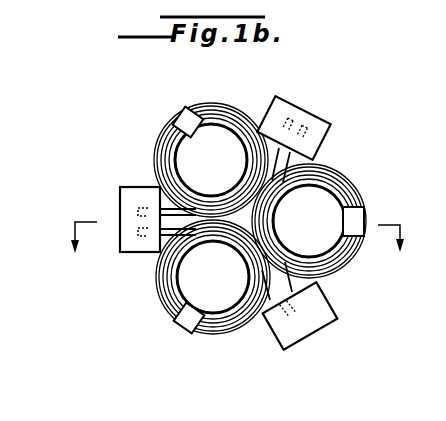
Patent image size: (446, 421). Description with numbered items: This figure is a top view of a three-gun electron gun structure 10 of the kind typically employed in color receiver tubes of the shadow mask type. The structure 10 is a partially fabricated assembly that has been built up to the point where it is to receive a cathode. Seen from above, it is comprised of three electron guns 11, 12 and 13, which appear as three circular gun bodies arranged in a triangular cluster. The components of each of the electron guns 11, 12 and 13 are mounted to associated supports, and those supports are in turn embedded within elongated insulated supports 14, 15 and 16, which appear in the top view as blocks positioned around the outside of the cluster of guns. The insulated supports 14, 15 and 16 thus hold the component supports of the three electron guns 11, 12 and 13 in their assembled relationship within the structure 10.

The electron gun structure 10 is at (46, 234).
The electron gun 11 is at (197, 77).
The electron gun 12 is at (381, 197).
The electron gun 13 is at (168, 338).
The elongated insulated support 14 is at (311, 104).
The elongated insulated support 15 is at (320, 333).
The elongated insulated support 16 is at (122, 254).